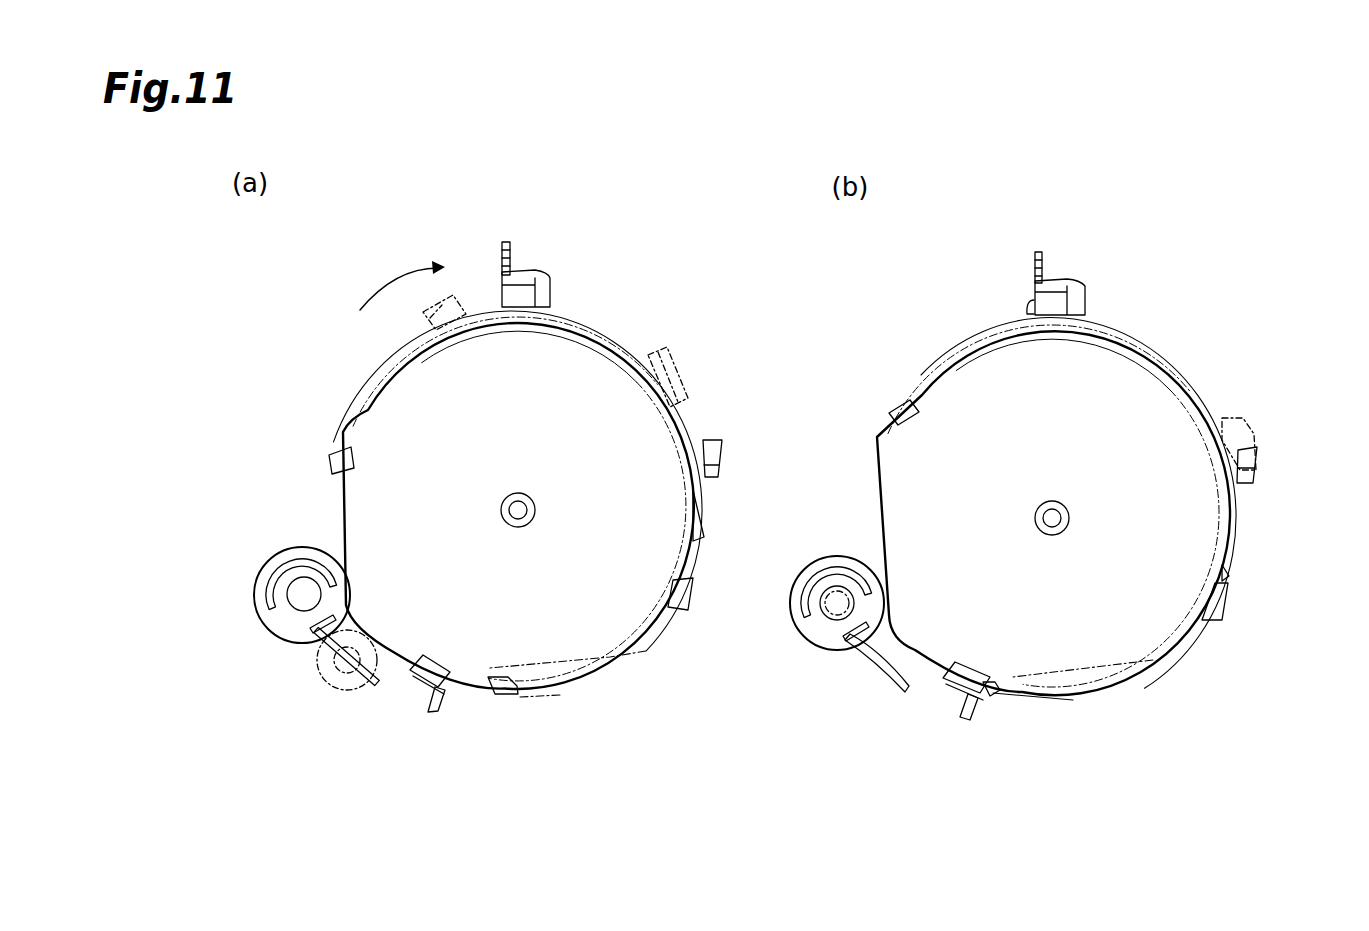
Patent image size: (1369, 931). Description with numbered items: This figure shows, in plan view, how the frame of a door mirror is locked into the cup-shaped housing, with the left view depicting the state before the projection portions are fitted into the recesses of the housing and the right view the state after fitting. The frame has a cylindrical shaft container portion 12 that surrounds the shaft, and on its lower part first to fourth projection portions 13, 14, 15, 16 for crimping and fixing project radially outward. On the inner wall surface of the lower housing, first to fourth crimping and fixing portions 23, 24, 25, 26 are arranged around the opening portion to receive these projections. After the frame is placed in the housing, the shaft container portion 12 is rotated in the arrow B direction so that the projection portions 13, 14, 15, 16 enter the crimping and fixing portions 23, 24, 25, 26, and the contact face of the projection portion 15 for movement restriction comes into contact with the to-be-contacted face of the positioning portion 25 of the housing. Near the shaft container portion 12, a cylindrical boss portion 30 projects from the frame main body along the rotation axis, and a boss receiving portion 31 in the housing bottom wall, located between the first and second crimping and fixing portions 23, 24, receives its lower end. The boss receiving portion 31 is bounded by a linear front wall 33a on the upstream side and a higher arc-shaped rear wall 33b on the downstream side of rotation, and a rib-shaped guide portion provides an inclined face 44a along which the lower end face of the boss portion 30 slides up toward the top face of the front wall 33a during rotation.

The shaft container portion 12 is at (605, 327).
The first projection portion for crimping and fixing 13 is at (432, 314).
The second projection portion for crimping and fixing 14 is at (503, 694).
The third projection portion for crimping and fixing 15 is at (684, 360).
The fourth projection portion for crimping and fixing 16 is at (700, 525).
The first crimping and fixing portion 23 is at (545, 268).
The second crimping and fixing portion 24 is at (420, 688).
The third crimping and fixing portion 25 is at (720, 450).
The fourth crimping and fixing portion 26 is at (690, 600).
The boss portion 30 is at (560, 615).
The boss receiving portion 31 is at (286, 615).
The front wall 33a is at (308, 636).
The rear wall 33b is at (288, 557).
The inclined face 44a is at (888, 674).
The arrow B direction B is at (410, 285).